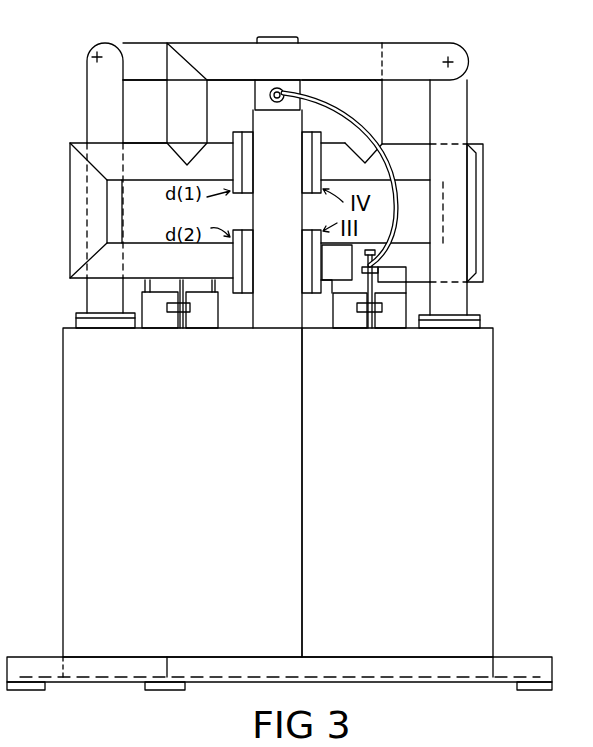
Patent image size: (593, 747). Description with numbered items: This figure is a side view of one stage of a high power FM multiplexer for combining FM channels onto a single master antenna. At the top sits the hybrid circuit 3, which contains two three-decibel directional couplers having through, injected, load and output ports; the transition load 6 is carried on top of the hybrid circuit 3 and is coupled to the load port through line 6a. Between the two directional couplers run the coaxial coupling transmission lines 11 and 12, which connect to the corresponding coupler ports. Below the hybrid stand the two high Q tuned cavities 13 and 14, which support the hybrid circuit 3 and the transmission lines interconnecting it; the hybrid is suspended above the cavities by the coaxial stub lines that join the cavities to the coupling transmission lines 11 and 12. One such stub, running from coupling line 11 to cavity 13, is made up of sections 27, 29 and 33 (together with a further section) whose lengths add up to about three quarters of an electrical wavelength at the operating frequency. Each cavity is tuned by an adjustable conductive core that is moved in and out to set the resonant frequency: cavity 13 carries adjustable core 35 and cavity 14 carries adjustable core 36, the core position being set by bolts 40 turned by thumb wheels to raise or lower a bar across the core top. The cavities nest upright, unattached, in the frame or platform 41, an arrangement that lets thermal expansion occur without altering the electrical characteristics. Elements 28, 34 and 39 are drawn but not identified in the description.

The hybrid circuit 3 is at (285, 227).
The transition load 6 is at (262, 37).
The line 6a is at (394, 182).
The coupling transmission line 11 is at (70, 190).
The coupling transmission line 12 is at (484, 204).
The tuned cavity 13 is at (495, 488).
The tuned cavity 14 is at (63, 489).
The section 27 is at (162, 121).
The right section 28 is at (400, 117).
The section 29 is at (322, 43).
The section 33 is at (470, 114).
The left column 34 is at (87, 110).
The adjustable core 35 is at (374, 262).
The adjustable core 36 is at (164, 286).
The right block 39 is at (353, 308).
The bolts 40 is at (199, 307).
The frame or platform 41 is at (526, 657).